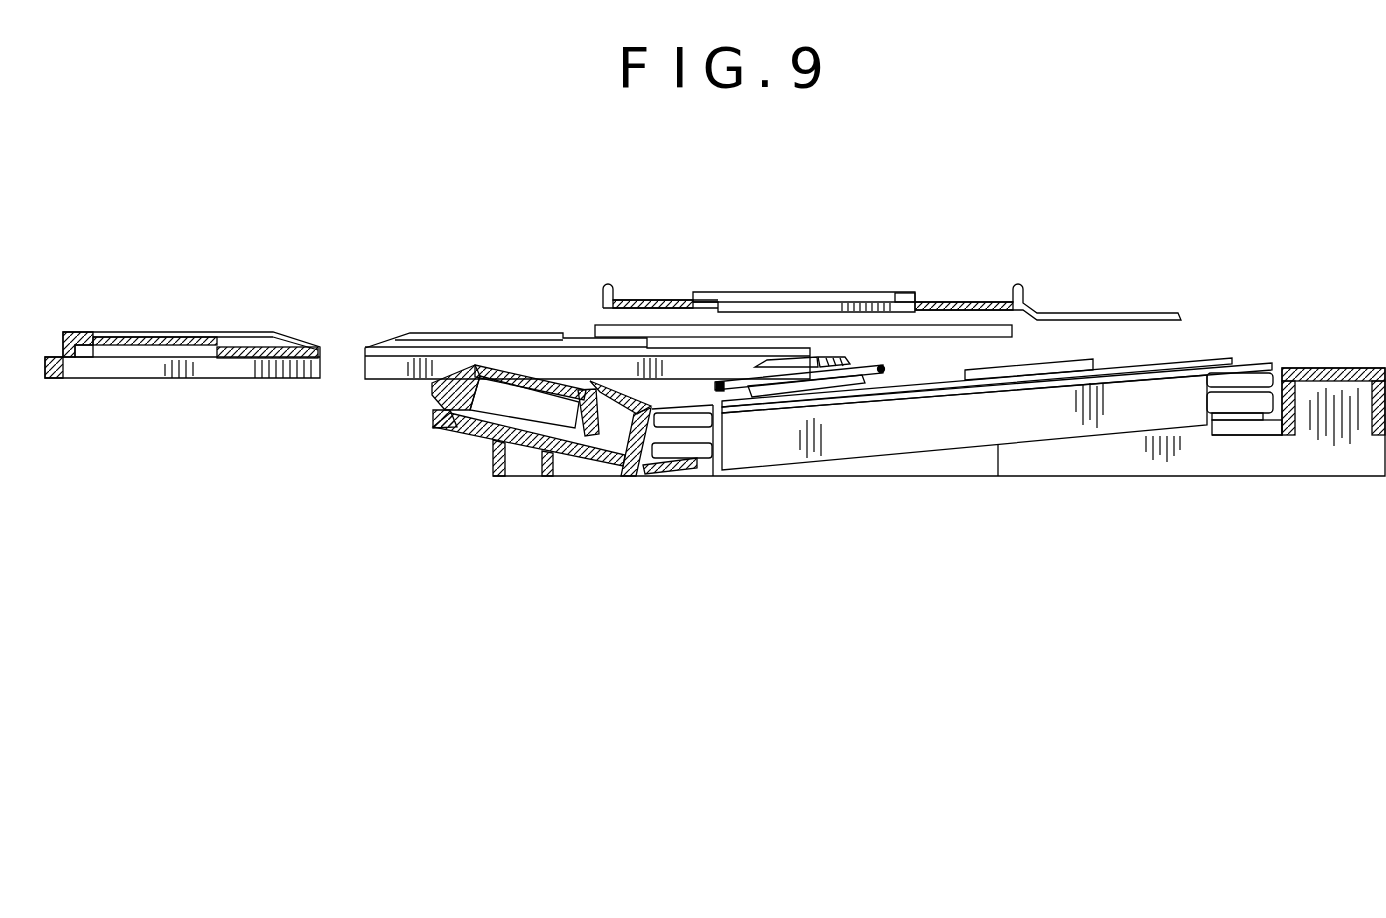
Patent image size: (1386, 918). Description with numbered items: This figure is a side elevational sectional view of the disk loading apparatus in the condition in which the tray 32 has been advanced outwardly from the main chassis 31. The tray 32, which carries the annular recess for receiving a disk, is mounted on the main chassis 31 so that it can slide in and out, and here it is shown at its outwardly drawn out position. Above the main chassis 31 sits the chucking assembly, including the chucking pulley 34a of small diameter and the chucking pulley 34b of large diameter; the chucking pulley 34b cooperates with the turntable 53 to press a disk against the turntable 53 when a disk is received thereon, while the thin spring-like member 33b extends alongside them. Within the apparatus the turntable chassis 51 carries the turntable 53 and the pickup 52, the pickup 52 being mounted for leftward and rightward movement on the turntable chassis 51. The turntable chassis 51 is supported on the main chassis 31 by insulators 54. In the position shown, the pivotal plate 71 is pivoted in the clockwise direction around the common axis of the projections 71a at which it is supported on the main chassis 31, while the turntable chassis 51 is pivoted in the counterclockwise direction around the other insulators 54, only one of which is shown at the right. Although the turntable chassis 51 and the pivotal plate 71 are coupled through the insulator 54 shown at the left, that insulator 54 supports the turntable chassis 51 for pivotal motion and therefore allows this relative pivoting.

The main chassis 31 is at (1305, 455).
The tray 32 is at (427, 395).
The leaf spring 33b is at (1181, 311).
The chucking pulley 34a is at (797, 292).
The chucking pulley 34b is at (948, 325).
The turntable chassis 51 is at (957, 430).
The pickup 52 is at (1077, 360).
The turntable 53 is at (872, 368).
The insulator 54 is at (704, 440).
The pivotal plate 71 is at (607, 430).
The projections 71a is at (450, 428).